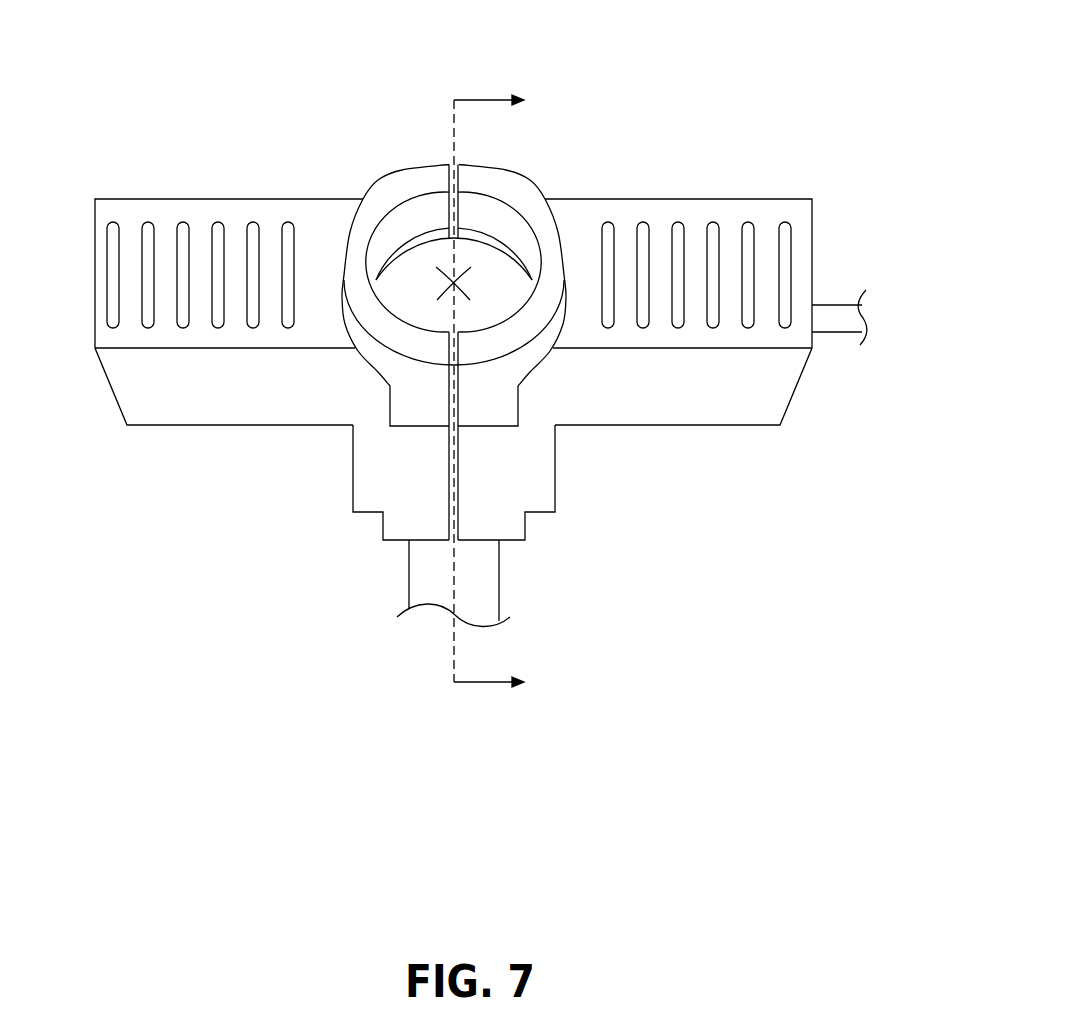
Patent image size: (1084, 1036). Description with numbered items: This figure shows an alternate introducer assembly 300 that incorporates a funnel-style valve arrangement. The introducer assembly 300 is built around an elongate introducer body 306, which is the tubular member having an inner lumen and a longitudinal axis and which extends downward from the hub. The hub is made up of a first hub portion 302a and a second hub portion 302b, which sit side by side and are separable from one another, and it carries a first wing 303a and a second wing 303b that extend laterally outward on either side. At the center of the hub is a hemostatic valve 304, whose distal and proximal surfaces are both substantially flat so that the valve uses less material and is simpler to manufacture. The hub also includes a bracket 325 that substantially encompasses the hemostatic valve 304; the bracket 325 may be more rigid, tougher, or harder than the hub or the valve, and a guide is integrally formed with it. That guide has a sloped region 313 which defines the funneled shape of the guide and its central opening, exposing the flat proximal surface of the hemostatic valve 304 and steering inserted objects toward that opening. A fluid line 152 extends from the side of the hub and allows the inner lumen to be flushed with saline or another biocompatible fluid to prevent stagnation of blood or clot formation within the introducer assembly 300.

The introducer assembly 300 is at (636, 98).
The sloped region 313 is at (425, 217).
The bracket 325 is at (387, 207).
The hemostatic valve 304 is at (477, 277).
The first wing 303a is at (192, 410).
The second wing 303b is at (667, 210).
The first hub portion 302a is at (365, 473).
The second hub portion 302b is at (540, 465).
The elongate introducer body 306 is at (483, 576).
The fluid line 152 is at (846, 300).